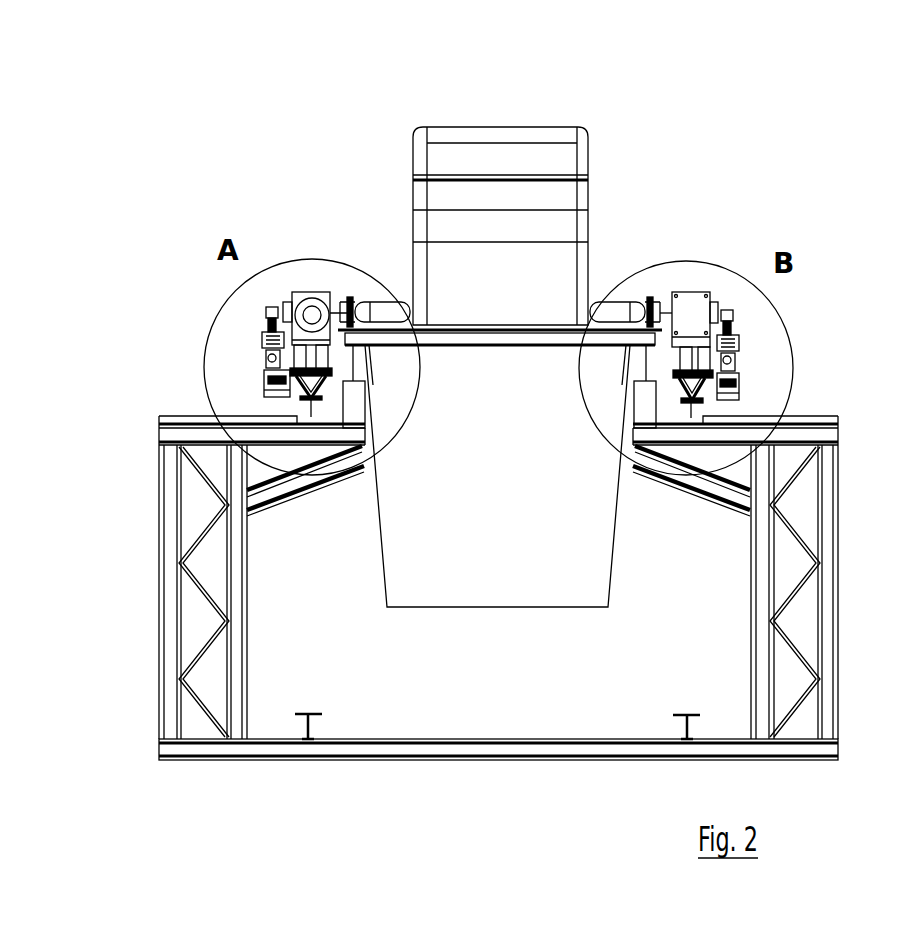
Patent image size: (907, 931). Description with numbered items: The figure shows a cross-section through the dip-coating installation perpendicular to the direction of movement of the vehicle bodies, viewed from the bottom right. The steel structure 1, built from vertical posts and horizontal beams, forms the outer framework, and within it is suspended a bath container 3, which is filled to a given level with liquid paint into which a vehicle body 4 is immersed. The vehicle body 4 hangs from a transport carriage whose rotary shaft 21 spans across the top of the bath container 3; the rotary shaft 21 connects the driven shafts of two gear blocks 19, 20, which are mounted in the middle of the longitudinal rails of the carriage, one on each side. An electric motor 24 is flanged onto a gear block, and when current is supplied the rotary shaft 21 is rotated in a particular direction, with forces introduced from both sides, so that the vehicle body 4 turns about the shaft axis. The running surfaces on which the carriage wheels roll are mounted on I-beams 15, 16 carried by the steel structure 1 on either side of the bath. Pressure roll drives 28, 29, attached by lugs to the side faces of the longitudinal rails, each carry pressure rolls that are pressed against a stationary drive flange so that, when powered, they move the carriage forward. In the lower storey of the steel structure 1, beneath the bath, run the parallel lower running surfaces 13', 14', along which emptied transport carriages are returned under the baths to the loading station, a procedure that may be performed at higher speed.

The steel structure 1 is at (176, 602).
The bath container 3 is at (516, 505).
The vehicle body 4 is at (492, 175).
The lower running surface 13' is at (330, 752).
The lower running surface 14' is at (666, 753).
The I-beam 15 is at (277, 406).
The I-beam 16 is at (723, 407).
The gear block 19 is at (292, 295).
The gear block 20 is at (688, 307).
The rotary shaft 21 is at (383, 313).
The electric motor 24 is at (312, 315).
The pressure roll drive 28 is at (262, 316).
The pressure roll drive 29 is at (744, 321).